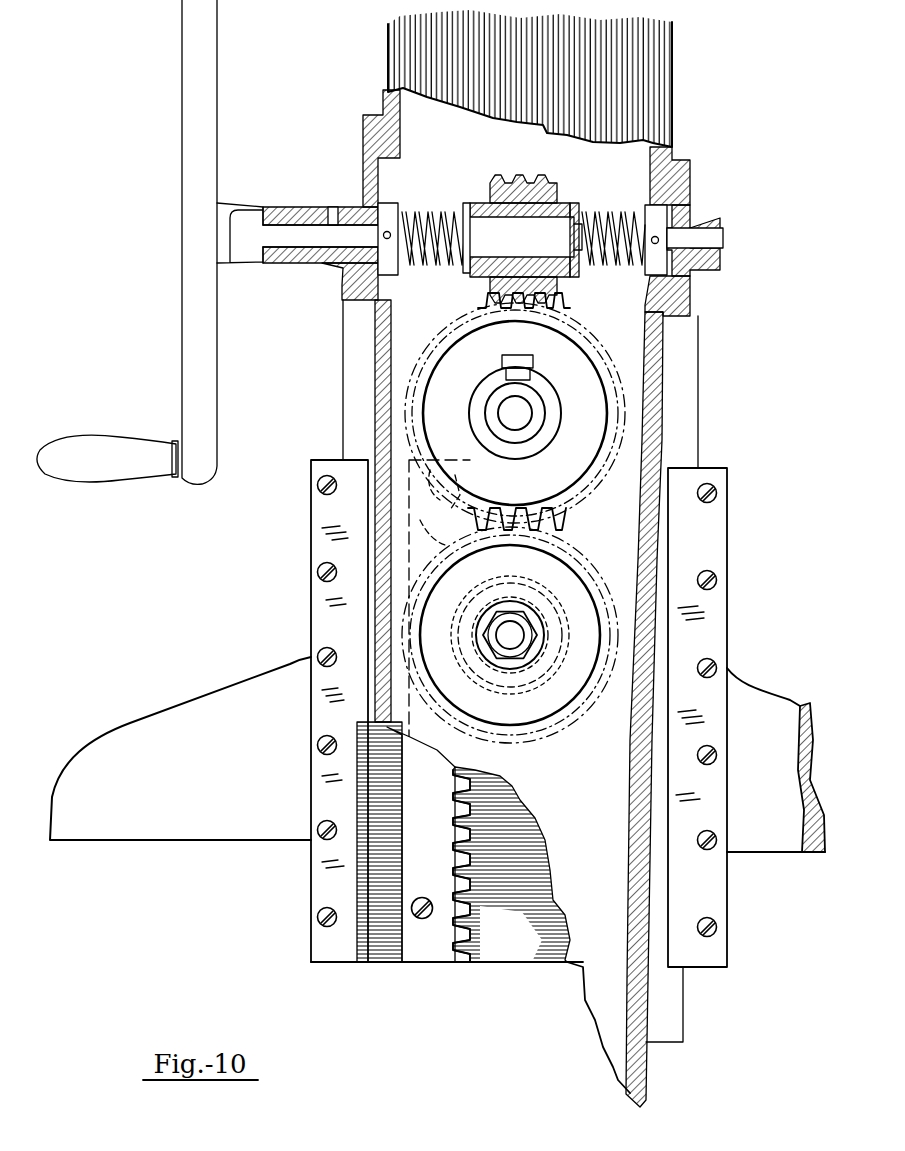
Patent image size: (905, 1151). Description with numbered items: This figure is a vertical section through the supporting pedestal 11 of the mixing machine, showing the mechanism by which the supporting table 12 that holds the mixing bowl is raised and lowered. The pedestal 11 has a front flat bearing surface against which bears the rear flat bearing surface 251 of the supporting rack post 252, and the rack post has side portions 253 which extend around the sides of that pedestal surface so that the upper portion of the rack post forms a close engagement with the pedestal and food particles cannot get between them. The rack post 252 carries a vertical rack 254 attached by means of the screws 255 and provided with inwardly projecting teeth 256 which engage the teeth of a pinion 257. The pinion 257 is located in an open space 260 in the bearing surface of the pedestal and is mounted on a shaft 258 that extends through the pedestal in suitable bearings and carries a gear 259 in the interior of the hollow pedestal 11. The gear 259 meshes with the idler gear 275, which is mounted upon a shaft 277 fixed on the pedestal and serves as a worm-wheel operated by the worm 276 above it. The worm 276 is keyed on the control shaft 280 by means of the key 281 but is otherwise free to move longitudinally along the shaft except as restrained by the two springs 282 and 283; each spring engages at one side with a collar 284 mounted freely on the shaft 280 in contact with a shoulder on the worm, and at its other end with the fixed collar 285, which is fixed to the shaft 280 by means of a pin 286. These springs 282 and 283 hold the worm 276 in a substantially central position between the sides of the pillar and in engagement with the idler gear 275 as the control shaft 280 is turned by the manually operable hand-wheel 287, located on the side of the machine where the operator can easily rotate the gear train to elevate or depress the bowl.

The supporting pedestal 11 is at (378, 395).
The supporting table 12 is at (122, 825).
The rear flat bearing surface 251 is at (375, 967).
The supporting rack post 252 is at (542, 966).
The side portions 253 is at (318, 887).
The vertical rack 254 is at (697, 900).
The screws 255 is at (433, 968).
The inwardly projecting teeth 256 is at (467, 837).
The pinion 257 is at (550, 618).
The shaft 258 is at (508, 647).
The gear 259 is at (557, 545).
The open space 260 is at (570, 643).
The idler gear 275 is at (588, 357).
The worm 276 is at (528, 192).
The shaft 277 is at (517, 413).
The control shaft 280 is at (278, 235).
The key 281 is at (560, 216).
The spring 282 is at (440, 265).
The spring 283 is at (612, 263).
The collar 284 is at (458, 205).
The fixed collar 285 is at (389, 205).
The pin 286 is at (398, 212).
The hand-wheel 287 is at (190, 122).